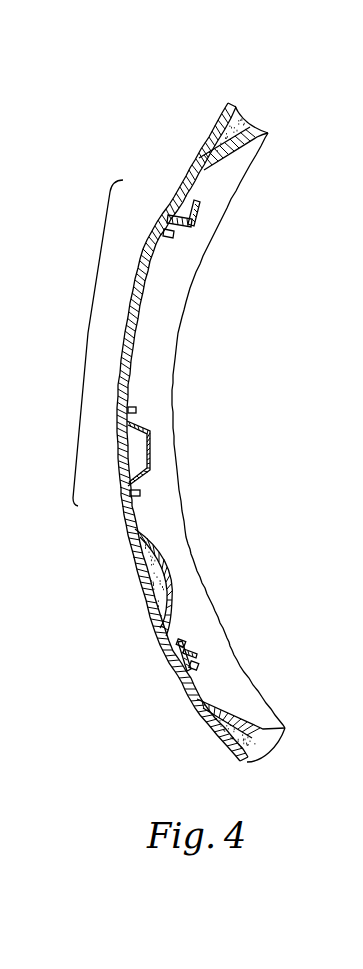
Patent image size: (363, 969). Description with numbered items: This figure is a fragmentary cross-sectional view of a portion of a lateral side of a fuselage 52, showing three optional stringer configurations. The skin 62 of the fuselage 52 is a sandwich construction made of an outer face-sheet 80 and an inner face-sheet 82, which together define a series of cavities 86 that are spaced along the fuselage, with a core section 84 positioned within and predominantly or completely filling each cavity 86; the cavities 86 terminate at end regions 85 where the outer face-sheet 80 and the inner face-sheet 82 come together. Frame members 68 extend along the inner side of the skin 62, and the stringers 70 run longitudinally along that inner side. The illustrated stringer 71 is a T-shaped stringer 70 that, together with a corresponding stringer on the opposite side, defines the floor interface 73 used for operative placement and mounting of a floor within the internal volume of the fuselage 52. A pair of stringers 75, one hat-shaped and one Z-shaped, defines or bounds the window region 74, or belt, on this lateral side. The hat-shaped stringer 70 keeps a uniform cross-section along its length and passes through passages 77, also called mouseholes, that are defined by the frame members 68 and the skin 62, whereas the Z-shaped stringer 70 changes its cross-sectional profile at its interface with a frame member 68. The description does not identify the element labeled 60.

The fuselage 52 is at (144, 150).
The outer panel 60 is at (283, 132).
The skin 62 is at (187, 147).
The frame member 68 is at (241, 185).
The stringer 70 is at (205, 231).
The stringer 71 is at (200, 653).
The floor interface 73 is at (241, 640).
The window region 74 is at (88, 333).
The stringer 75 is at (202, 212).
The passage 77 is at (152, 474).
The outer face-sheet 80 is at (210, 131).
The inner face-sheet 82 is at (260, 132).
The core section 84 is at (157, 533).
The end region 85 is at (193, 161).
The cavity 86 is at (242, 113).